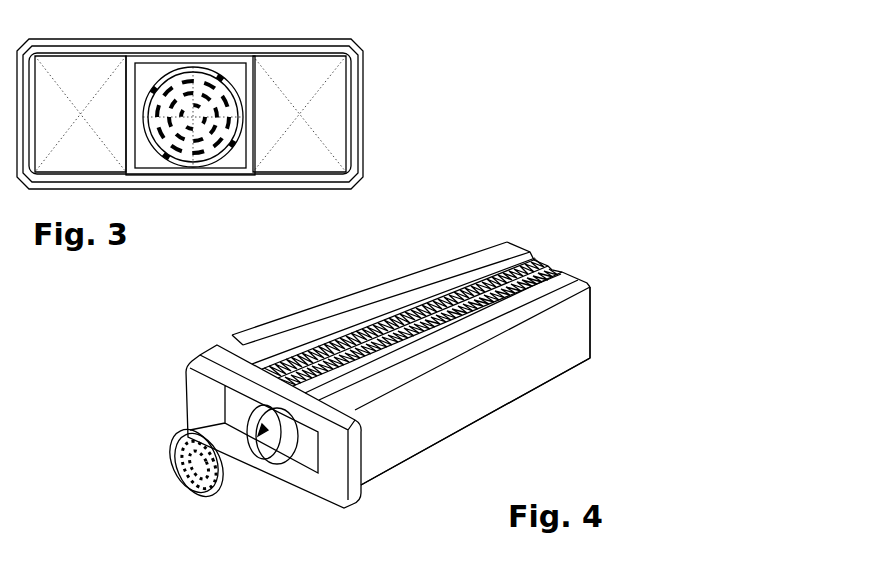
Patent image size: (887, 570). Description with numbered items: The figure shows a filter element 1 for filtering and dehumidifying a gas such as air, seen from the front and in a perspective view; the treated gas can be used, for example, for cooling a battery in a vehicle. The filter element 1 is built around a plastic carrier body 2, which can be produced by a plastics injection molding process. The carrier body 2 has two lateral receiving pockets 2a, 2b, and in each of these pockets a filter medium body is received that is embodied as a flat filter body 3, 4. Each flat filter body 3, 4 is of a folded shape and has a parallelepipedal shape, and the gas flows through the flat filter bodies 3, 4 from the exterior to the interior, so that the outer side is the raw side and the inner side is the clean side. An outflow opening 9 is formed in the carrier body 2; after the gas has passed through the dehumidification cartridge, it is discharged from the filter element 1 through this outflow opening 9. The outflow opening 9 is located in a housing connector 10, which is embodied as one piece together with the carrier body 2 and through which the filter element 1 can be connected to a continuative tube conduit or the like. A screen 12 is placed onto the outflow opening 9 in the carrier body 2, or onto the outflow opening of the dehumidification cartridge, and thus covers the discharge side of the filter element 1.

In FIG. 3, the filter element 1 is at (387, 64).
In FIG. 4, the filter element 1 is at (343, 298).
In FIG. 3, the carrier body 2 is at (311, 43).
In FIG. 4, the carrier body 2 is at (447, 280).
In FIG. 4, the receiving pocket 2a is at (393, 307).
In FIG. 4, the receiving pocket 2b is at (437, 340).
In FIG. 4, the flat filter body 3 is at (297, 337).
In FIG. 4, the flat filter body 4 is at (425, 430).
In FIG. 4, the outflow opening 9 is at (263, 436).
In FIG. 3, the housing connector 10 is at (362, 153).
In FIG. 4, the housing connector 10 is at (197, 367).
In FIG. 3, the screen 12 is at (201, 160).
In FIG. 4, the screen 12 is at (190, 477).